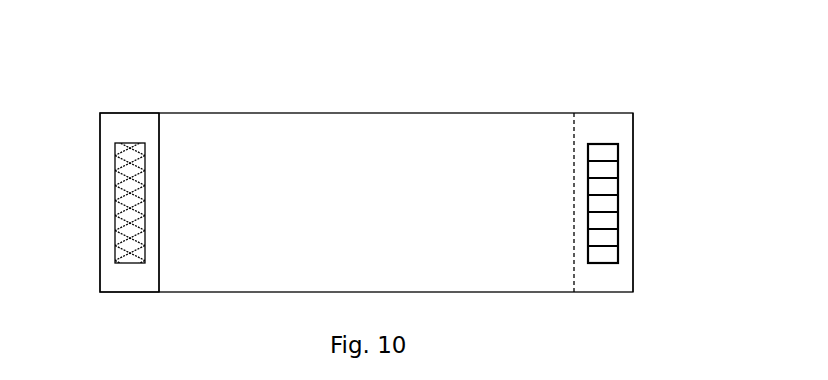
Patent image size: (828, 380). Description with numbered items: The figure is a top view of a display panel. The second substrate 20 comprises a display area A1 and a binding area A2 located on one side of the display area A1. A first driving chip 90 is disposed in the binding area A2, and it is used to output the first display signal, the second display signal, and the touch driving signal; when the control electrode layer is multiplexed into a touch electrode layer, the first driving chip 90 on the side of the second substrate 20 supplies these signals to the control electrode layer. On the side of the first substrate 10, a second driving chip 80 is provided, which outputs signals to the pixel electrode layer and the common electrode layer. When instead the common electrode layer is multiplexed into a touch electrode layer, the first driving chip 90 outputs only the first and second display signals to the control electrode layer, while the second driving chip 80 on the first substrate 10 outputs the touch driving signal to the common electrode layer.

The first substrate 10 is at (138, 113).
The second substrate 20 is at (607, 113).
The display area A1 is at (320, 135).
The binding area A2 is at (623, 185).
The second driving chip 80 is at (118, 192).
The first driving chip 90 is at (618, 240).